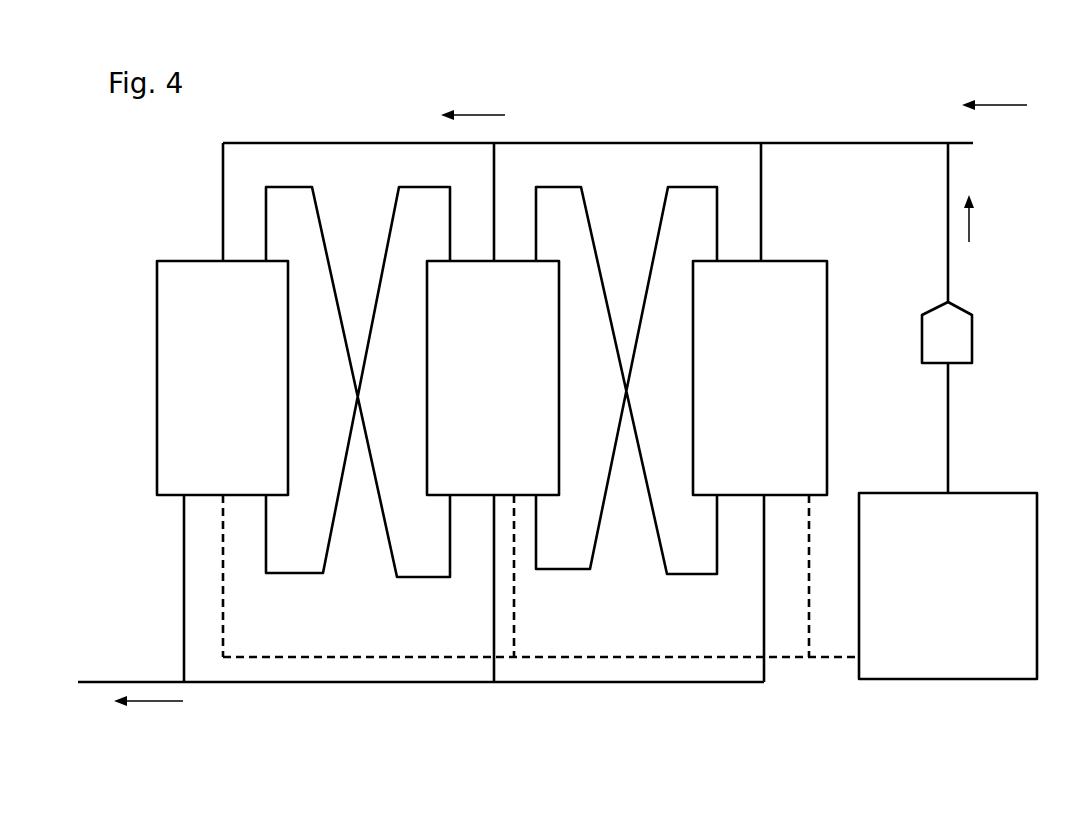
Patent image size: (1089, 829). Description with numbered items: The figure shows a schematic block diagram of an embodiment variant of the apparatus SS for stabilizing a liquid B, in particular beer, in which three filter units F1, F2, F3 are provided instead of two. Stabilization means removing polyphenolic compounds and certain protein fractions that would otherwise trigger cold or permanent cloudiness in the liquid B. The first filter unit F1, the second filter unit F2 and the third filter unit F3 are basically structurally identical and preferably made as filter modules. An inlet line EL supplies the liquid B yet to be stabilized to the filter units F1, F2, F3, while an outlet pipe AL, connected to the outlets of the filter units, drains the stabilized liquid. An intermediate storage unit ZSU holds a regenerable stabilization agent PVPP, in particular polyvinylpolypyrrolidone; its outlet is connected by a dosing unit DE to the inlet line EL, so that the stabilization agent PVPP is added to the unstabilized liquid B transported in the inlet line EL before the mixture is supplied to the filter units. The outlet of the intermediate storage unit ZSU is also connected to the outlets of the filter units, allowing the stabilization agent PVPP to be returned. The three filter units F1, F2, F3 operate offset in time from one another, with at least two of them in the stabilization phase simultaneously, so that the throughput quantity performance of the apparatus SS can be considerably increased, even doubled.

The first filter unit F1 is at (222, 378).
The second filter unit F2 is at (493, 378).
The third filter unit F3 is at (760, 378).
The inlet line EL is at (923, 138).
The outlet pipe AL is at (260, 687).
The dosing unit DE is at (973, 327).
The intermediate storage unit ZSU is at (977, 490).
The regenerable stabilization agent PVPP is at (974, 391).
The apparatus for stabilizing a liquid SS is at (877, 730).
The liquid B is at (994, 92).